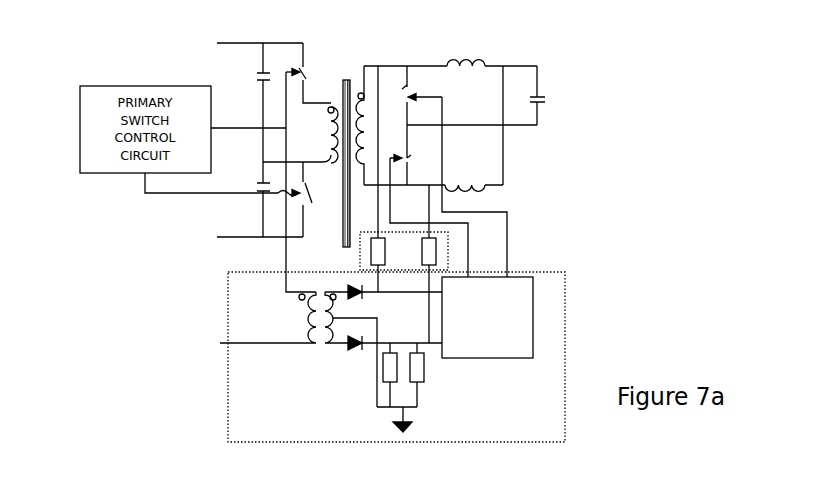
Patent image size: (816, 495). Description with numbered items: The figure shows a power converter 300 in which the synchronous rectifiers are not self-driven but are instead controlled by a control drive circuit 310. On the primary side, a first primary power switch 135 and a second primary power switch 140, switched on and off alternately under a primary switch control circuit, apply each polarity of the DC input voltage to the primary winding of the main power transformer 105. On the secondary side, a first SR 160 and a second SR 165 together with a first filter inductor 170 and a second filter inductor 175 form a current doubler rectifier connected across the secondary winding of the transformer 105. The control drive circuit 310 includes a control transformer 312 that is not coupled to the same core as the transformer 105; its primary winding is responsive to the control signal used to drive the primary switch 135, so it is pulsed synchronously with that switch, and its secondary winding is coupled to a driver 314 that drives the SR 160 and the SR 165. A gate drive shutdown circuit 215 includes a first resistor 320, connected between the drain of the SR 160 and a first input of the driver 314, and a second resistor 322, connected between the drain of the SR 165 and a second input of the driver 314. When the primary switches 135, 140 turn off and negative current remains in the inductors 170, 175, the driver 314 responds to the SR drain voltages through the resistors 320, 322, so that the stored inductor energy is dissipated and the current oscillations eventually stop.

The isolation transformer 105 is at (347, 69).
The first primary power switch 135 is at (308, 65).
The second primary power switch 140 is at (312, 203).
The first SR 160 is at (402, 89).
The second SR 165 is at (411, 155).
The first filter inductor 170 is at (483, 58).
The second filter inductor 175 is at (487, 185).
The gate drive shutdown circuit 215 is at (447, 235).
The power converter 300 is at (130, 294).
The control drive circuit 310 is at (567, 317).
The control transformer 312 is at (317, 354).
The driver 314 is at (515, 277).
The first resistor 320 is at (367, 250).
The second resistor 322 is at (437, 250).